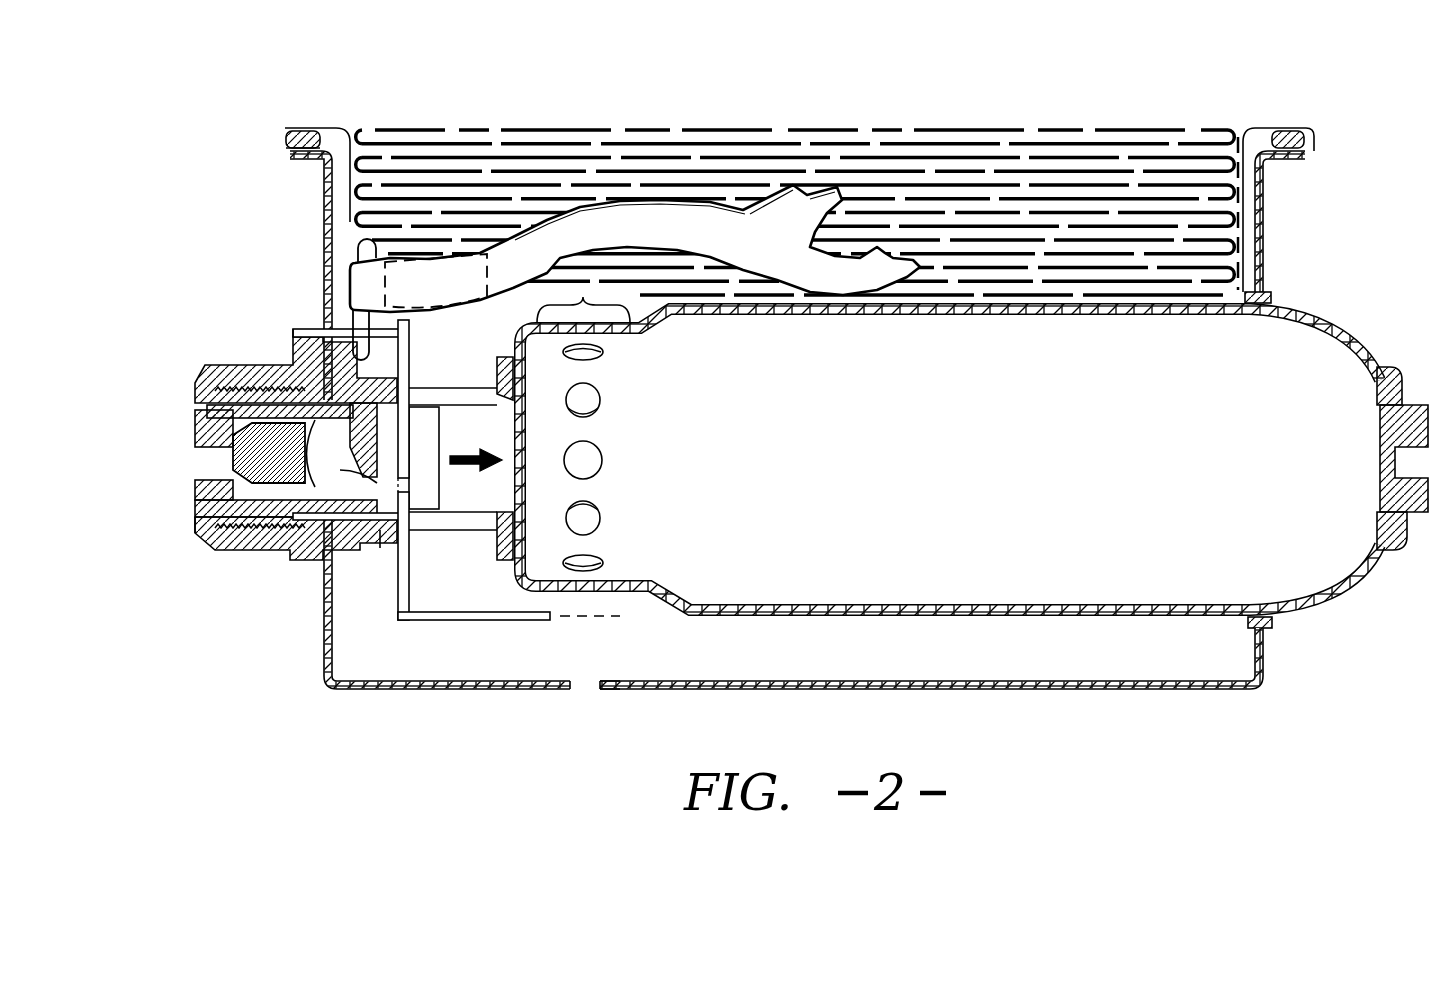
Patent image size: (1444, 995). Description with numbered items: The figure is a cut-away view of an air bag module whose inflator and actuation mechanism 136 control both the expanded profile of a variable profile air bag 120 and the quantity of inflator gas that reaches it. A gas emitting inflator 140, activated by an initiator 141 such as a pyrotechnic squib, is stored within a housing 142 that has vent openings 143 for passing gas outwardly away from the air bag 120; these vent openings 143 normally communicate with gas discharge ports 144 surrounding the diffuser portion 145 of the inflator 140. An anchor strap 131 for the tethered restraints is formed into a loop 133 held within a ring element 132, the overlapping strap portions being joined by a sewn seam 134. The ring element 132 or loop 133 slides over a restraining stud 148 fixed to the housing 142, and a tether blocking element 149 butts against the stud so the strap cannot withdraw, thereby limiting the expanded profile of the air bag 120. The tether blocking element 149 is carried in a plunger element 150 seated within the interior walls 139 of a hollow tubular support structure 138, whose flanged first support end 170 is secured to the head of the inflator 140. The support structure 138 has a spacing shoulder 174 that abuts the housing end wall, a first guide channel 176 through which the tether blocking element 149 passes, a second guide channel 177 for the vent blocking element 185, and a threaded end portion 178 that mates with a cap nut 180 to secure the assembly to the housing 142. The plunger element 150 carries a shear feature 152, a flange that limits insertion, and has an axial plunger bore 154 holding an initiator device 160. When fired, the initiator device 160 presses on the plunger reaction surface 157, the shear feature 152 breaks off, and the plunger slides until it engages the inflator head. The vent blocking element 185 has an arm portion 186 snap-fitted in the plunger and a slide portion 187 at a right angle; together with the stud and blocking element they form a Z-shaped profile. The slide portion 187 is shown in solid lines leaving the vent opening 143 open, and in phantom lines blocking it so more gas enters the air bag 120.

The air bag 120 is at (1115, 128).
The anchor strap 131 is at (624, 236).
The ring element 132 is at (345, 240).
The loop 133 is at (378, 262).
The sewn seam 134 is at (456, 262).
The actuation mechanism 136 is at (305, 305).
The support structure 138 is at (328, 682).
The interior walls 139 is at (300, 370).
The gas emitting inflator 140 is at (1302, 325).
The initiator 141 is at (1432, 410).
The housing 142 is at (1232, 690).
The vent openings 143 is at (598, 690).
The gas discharge ports 144 is at (602, 462).
The diffuser portion 145 is at (583, 293).
The restraining stud 148 is at (340, 300).
The tether blocking element 149 is at (410, 345).
The plunger element 150 is at (420, 500).
The shear feature 152 is at (258, 548).
The axial plunger bore 154 is at (205, 400).
The plunger reaction surface 157 is at (290, 385).
The initiator device 160 is at (210, 450).
The first support end 170 is at (575, 368).
The spacing shoulder 174 is at (318, 338).
The first guide channel 176 is at (450, 405).
The second guide channel 177 is at (472, 535).
The threaded end portion 178 is at (225, 560).
The cap nut 180 is at (185, 514).
The vent blocking element 185 is at (487, 622).
The arm portion 186 is at (385, 548).
The slide portion 187 is at (520, 622).